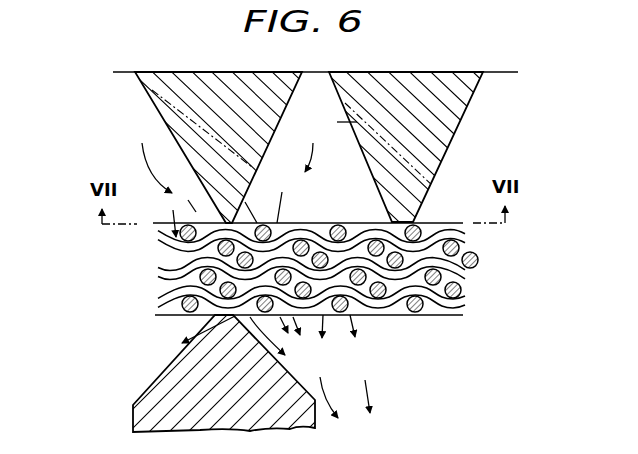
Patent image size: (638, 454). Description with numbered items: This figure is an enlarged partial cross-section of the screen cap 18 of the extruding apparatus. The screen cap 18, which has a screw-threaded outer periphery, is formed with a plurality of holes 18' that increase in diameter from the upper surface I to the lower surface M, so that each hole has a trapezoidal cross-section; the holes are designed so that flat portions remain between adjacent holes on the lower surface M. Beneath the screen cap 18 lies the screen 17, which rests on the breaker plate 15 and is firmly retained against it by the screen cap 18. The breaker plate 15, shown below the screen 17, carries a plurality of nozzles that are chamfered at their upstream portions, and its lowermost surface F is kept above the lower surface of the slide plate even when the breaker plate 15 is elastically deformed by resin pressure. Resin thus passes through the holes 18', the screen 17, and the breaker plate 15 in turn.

The screen cap 18 is at (215, 158).
The holes 18' is at (405, 154).
The screen 17 is at (350, 228).
The breaker plate 15 is at (173, 380).
The upper surface I is at (187, 71).
The lower surface M is at (258, 226).
The lower most surface F is at (156, 226).